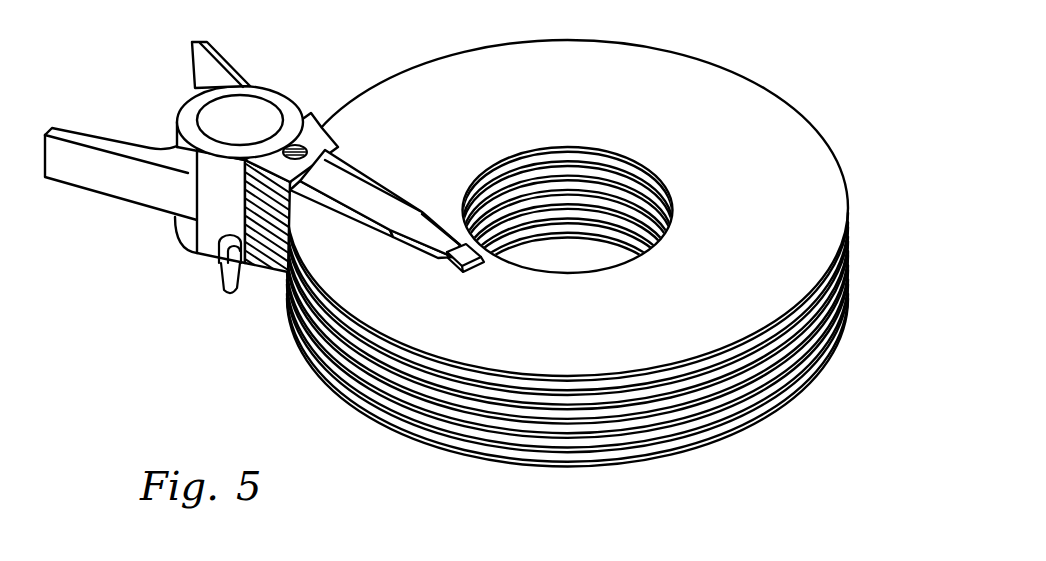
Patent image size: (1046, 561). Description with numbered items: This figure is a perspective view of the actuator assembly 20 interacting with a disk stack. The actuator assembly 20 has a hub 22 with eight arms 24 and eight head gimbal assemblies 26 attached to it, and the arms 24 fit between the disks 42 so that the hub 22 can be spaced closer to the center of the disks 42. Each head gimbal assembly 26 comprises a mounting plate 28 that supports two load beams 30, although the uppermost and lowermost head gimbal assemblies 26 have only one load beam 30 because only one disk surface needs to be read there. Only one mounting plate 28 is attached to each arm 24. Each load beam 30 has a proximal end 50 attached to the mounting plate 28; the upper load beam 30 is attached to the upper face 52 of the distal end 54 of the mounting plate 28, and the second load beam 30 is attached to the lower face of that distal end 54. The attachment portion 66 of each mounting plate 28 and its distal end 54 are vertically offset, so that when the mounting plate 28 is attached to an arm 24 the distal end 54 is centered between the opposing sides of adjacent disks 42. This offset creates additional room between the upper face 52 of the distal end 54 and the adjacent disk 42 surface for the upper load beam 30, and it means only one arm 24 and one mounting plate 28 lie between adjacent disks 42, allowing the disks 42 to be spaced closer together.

The actuator assembly 20 is at (166, 271).
The hub 22 is at (268, 87).
The actuator arm 24 is at (231, 274).
The head gimbal assembly 26 is at (442, 150).
The mounting plate 28 is at (313, 205).
The load beam 30 is at (424, 248).
The disk 42 is at (771, 398).
The proximal end 50 is at (396, 220).
The upper face 52 is at (380, 195).
The distal end 54 is at (372, 226).
The attachment portion 66 is at (318, 142).